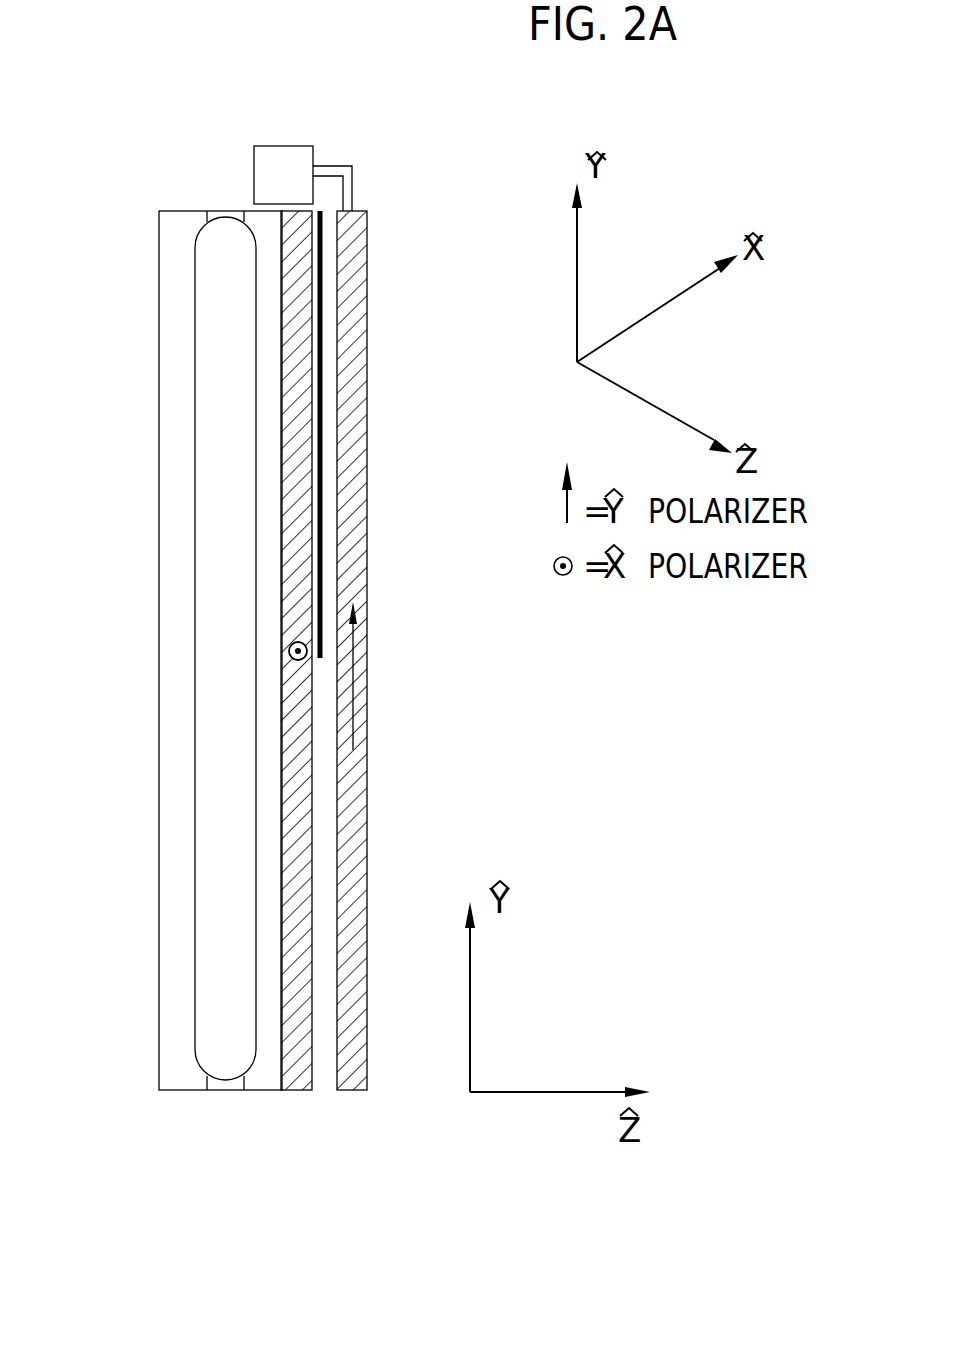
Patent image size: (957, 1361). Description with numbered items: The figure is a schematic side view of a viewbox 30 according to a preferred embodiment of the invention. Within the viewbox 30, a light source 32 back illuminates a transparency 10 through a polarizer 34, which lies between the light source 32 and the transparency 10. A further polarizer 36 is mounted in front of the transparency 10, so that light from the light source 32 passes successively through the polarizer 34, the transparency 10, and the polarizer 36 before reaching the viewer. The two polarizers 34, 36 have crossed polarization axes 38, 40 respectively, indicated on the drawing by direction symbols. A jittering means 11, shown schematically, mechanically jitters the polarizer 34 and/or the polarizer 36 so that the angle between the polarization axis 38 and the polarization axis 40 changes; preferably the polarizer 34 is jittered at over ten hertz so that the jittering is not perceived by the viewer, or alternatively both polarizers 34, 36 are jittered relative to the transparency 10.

The transparency 10 is at (334, 190).
The jittering means 11 is at (282, 155).
The viewbox 30 is at (176, 1132).
The light source 32 is at (196, 895).
The polarizer 34 is at (284, 1090).
The polarizer 36 is at (348, 1090).
The polarization axis 38 is at (285, 664).
The polarization axis 40 is at (353, 680).